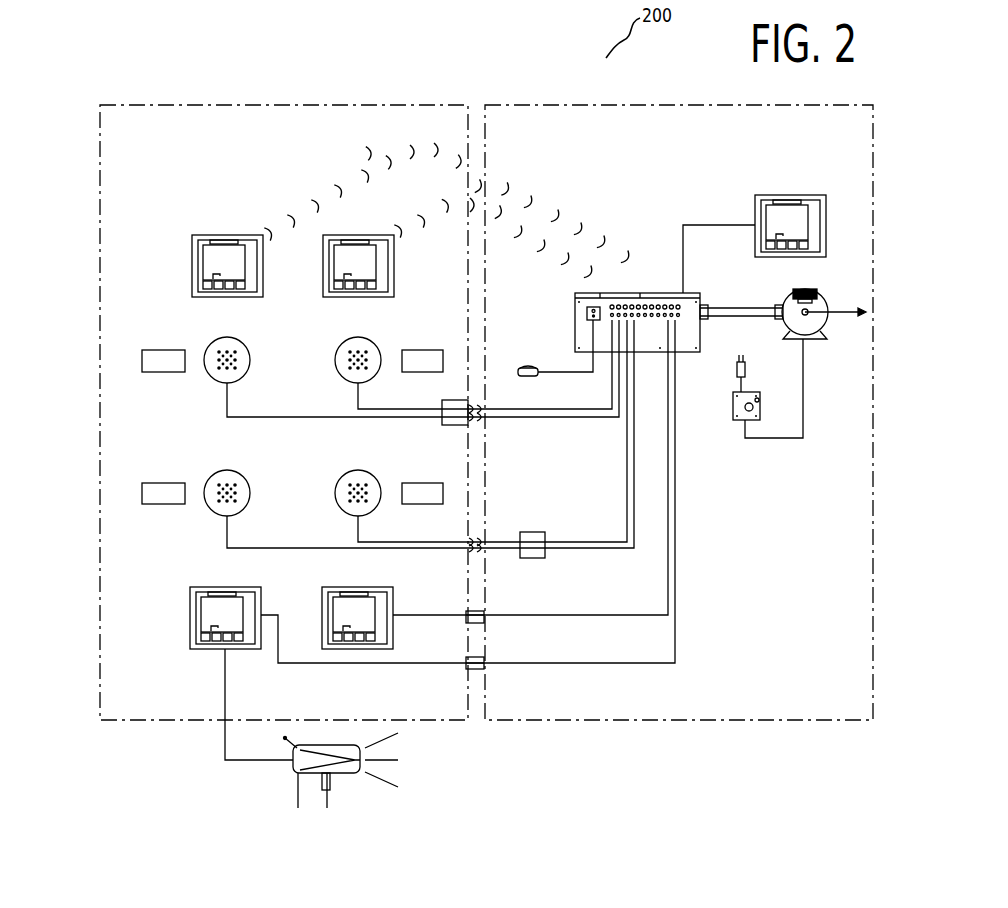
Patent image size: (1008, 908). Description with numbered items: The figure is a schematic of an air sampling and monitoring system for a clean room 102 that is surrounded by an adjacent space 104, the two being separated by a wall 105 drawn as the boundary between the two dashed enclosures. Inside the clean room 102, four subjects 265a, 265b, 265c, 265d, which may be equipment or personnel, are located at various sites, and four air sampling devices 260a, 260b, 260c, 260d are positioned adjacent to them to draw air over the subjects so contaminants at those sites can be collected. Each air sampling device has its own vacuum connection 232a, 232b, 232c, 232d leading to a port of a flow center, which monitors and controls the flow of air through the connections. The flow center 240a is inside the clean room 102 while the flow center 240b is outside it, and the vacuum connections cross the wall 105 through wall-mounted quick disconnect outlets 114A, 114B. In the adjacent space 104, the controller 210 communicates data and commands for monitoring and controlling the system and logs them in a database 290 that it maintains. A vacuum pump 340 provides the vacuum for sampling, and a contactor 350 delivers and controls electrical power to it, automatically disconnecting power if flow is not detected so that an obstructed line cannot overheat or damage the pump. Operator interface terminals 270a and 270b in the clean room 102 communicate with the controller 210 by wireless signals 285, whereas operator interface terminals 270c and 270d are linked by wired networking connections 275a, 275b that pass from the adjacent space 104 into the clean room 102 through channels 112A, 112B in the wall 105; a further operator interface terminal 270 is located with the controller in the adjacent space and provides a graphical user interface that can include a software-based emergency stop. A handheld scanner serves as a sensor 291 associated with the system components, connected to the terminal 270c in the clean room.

The clean room 102 is at (118, 105).
The adjacent space 104 is at (528, 105).
The wall 105 is at (479, 313).
The wireless signals 285 is at (447, 209).
The operator interface terminal 270a is at (192, 248).
The operator interface terminal 270b is at (395, 263).
The operator interface terminal 270c is at (190, 606).
The operator interface terminal 270d is at (392, 590).
The operator interface terminal 270 is at (812, 194).
The air sampling device 260a is at (208, 366).
The air sampling device 260b is at (346, 371).
The air sampling device 260c is at (208, 498).
The air sampling device 260d is at (346, 506).
The subject 265a is at (159, 350).
The subject 265b is at (413, 350).
The subject 265c is at (159, 483).
The subject 265d is at (413, 483).
The vacuum connection 232a is at (290, 417).
The vacuum connection 232b is at (429, 408).
The vacuum connection 232c is at (312, 554).
The vacuum connection 232d is at (434, 543).
The flow center 240a is at (442, 420).
The flow center 240b is at (536, 532).
The wall-mounted quick disconnect outlet 114A is at (482, 427).
The wall-mounted quick disconnect outlet 114B is at (476, 554).
The channel 112A is at (482, 626).
The channel 112B is at (482, 673).
The wired networking connection 275a is at (402, 617).
The wired networking connection 275b is at (402, 665).
The controller 210 is at (685, 293).
The database 290 is at (530, 366).
The vacuum pump 340 is at (822, 336).
The contactor 350 is at (733, 412).
The sensor 291 is at (293, 766).